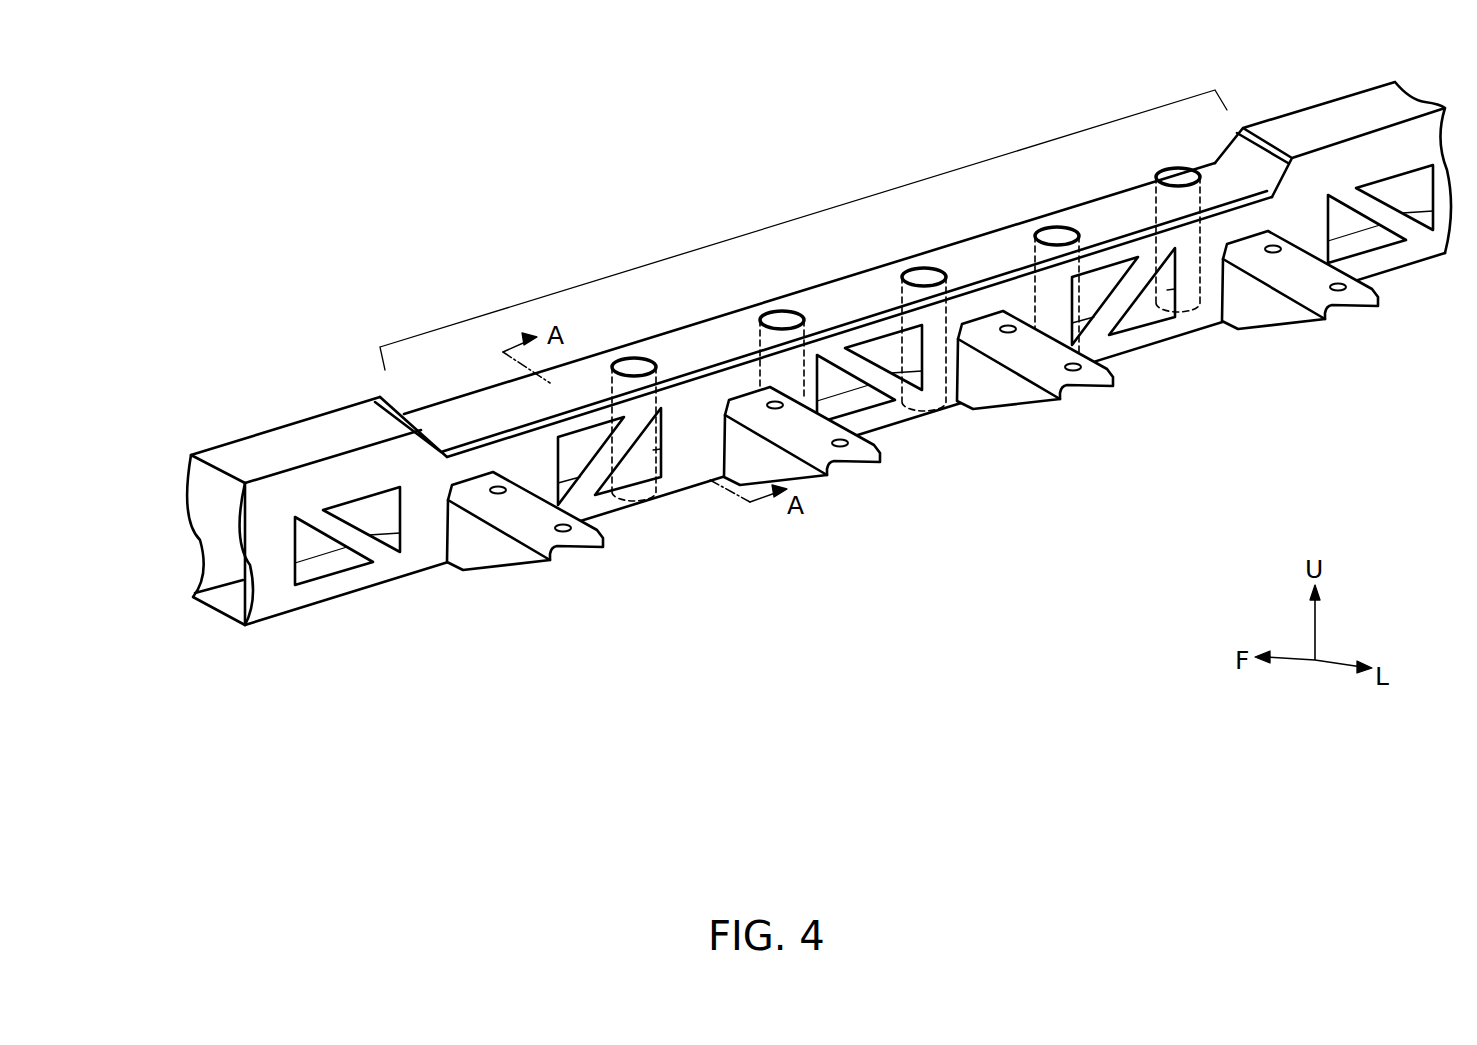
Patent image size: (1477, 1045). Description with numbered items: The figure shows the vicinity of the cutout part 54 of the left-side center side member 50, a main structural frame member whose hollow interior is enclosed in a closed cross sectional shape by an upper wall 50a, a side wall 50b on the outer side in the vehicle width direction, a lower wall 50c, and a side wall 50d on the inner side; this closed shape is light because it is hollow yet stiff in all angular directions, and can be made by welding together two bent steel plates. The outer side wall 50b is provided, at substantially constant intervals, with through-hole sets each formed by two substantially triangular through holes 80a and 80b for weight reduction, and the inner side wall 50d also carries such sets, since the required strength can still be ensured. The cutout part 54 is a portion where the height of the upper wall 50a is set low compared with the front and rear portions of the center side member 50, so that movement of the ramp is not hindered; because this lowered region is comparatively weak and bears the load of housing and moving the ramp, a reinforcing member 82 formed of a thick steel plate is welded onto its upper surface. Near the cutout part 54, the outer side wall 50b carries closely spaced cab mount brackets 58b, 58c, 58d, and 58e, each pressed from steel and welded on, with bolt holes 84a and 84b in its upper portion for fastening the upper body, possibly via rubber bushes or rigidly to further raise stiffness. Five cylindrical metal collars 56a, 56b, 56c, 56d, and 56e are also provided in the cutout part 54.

The center side member 50 is at (765, 413).
The upper wall 50a is at (222, 452).
The side wall 50b is at (258, 566).
The lower wall 50c is at (210, 622).
The side wall 50d is at (198, 540).
The cutout part 54 is at (797, 212).
The collar 56a is at (630, 356).
The collar 56b is at (770, 308).
The collar 56c is at (915, 266).
The collar 56d is at (1052, 225).
The collar 56e is at (1175, 167).
The cab mount bracket 58b is at (558, 594).
The cab mount bracket 58c is at (810, 500).
The cab mount bracket 58d is at (1025, 420).
The cab mount bracket 58e is at (1280, 336).
The through hole 80a is at (335, 576).
The through hole 80b is at (390, 520).
The reinforcing member 82 is at (488, 405).
The bolt hole 84a is at (514, 602).
The bolt hole 84b is at (612, 590).